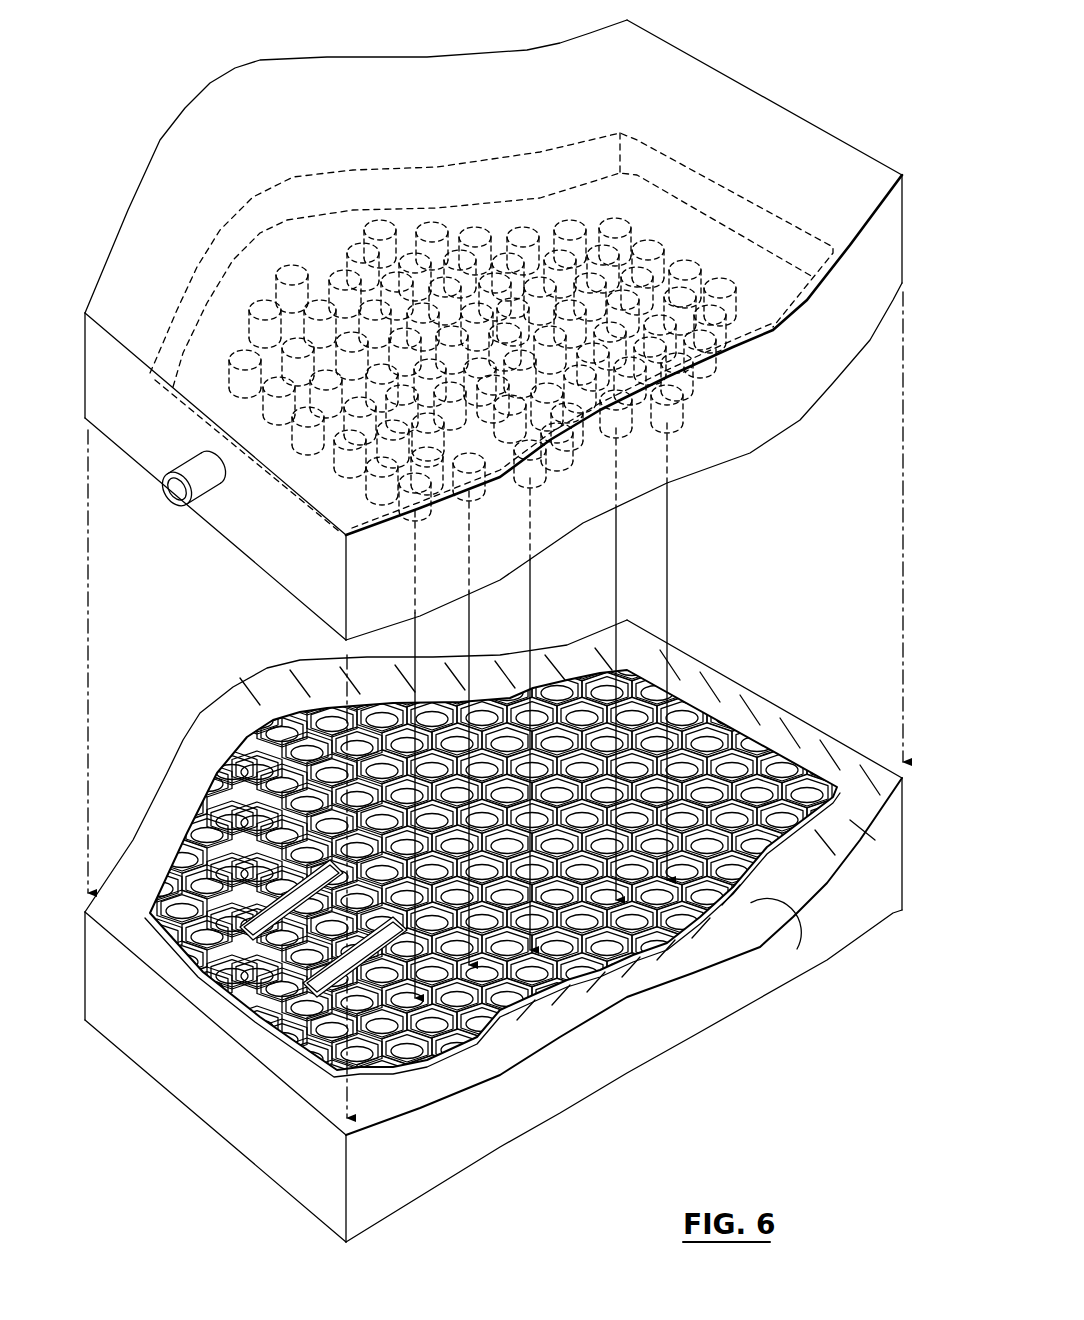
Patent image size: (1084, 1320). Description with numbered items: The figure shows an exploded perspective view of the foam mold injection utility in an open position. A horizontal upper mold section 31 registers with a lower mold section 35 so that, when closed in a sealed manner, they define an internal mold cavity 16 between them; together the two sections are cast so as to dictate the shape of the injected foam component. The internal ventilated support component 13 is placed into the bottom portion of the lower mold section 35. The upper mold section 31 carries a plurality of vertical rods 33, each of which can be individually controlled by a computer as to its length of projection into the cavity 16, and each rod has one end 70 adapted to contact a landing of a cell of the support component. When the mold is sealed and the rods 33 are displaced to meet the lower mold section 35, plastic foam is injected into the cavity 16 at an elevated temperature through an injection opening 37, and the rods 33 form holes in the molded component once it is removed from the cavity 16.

The internal ventilated support component 13 is at (763, 900).
The internal mold cavity 16 is at (603, 200).
The upper mold section 31 is at (128, 210).
The vertical rods 33 is at (683, 408).
The lower mold section 35 is at (247, 1108).
The injection opening 37 is at (162, 505).
The end of rod 70 is at (540, 482).